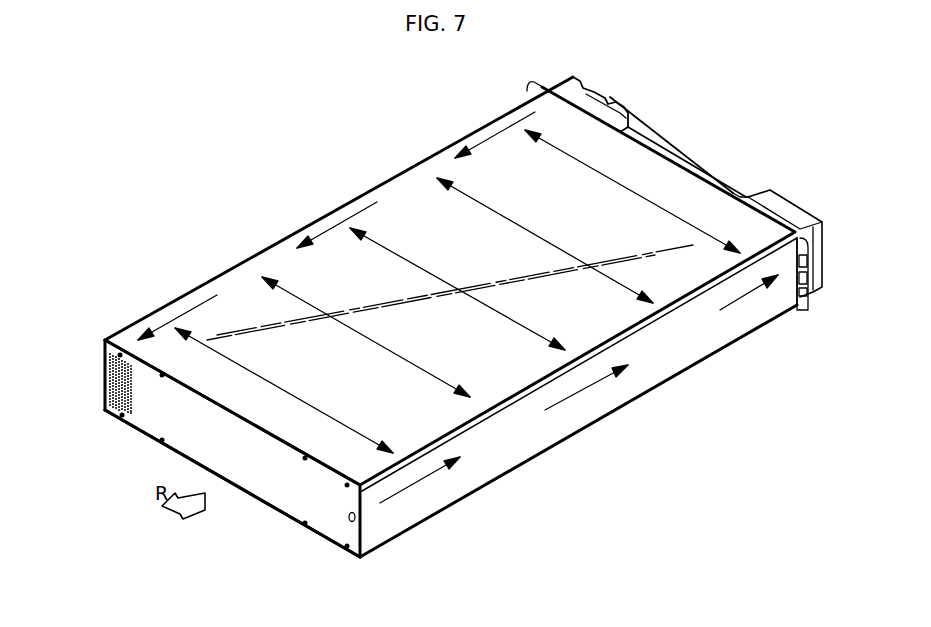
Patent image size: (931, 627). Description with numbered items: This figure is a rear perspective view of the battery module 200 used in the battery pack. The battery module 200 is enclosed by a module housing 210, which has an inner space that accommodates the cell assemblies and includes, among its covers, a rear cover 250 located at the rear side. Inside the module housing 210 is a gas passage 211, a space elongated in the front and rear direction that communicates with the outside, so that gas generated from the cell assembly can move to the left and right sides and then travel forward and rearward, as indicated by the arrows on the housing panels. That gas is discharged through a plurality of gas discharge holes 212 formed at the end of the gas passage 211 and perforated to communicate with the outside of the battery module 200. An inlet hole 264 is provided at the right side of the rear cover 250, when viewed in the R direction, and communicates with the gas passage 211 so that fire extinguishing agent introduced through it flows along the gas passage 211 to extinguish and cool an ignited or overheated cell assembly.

The battery module 200 is at (200, 124).
The module housing 210 is at (435, 340).
The gas passage 211 is at (497, 132).
The gas discharge holes 212 is at (112, 383).
The rear cover 250 is at (273, 487).
The inlet hole 264 is at (353, 524).